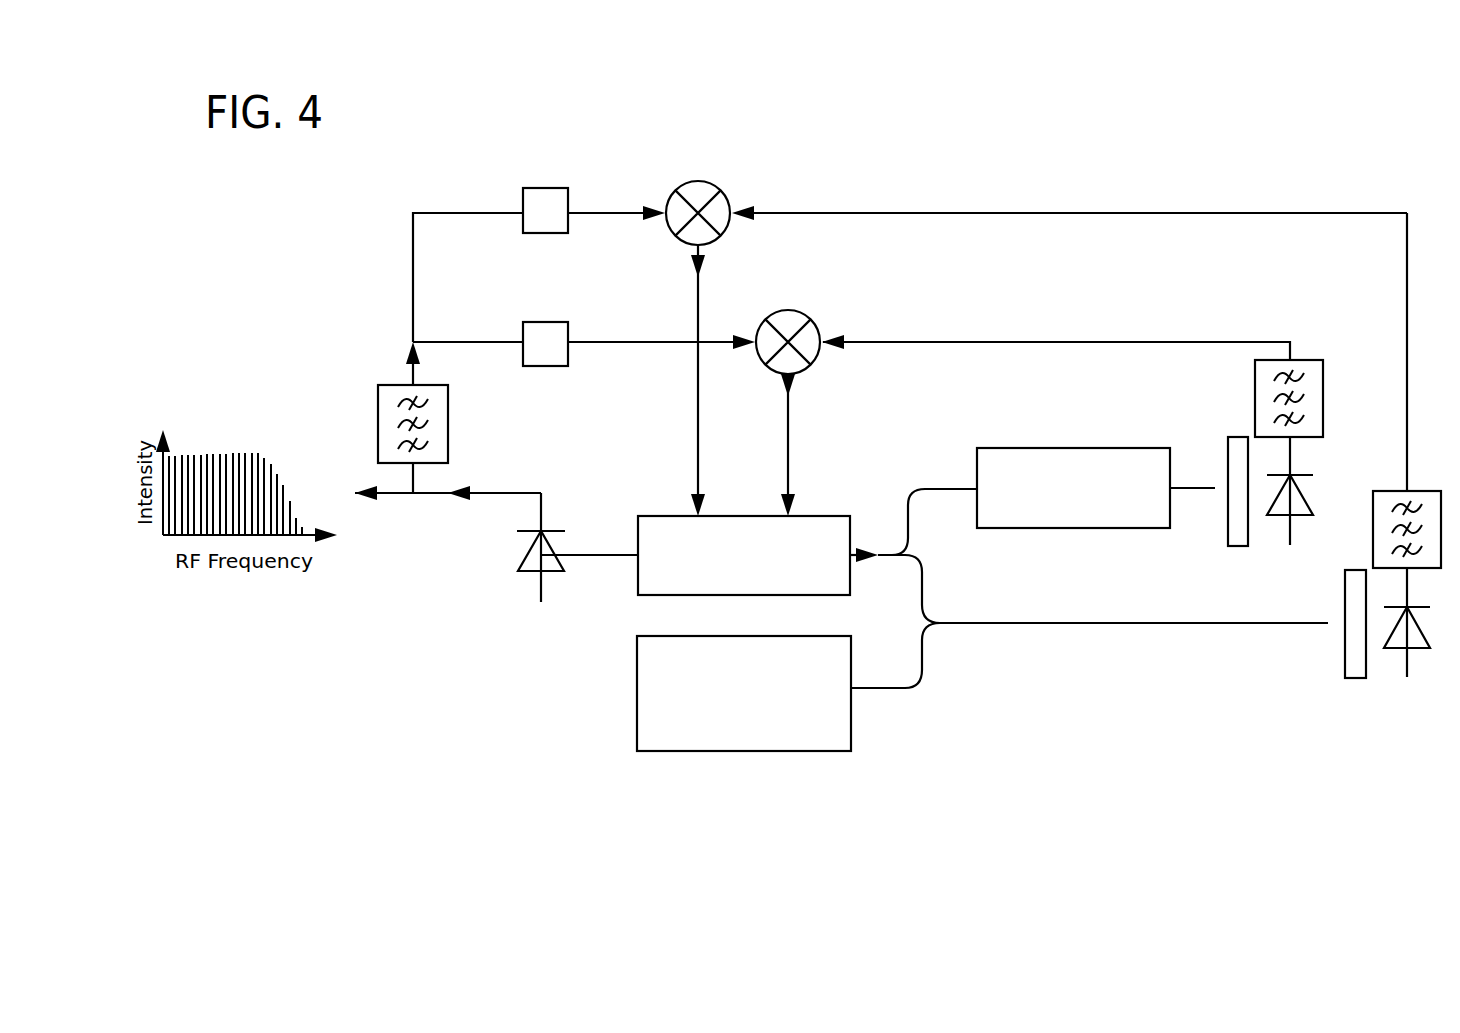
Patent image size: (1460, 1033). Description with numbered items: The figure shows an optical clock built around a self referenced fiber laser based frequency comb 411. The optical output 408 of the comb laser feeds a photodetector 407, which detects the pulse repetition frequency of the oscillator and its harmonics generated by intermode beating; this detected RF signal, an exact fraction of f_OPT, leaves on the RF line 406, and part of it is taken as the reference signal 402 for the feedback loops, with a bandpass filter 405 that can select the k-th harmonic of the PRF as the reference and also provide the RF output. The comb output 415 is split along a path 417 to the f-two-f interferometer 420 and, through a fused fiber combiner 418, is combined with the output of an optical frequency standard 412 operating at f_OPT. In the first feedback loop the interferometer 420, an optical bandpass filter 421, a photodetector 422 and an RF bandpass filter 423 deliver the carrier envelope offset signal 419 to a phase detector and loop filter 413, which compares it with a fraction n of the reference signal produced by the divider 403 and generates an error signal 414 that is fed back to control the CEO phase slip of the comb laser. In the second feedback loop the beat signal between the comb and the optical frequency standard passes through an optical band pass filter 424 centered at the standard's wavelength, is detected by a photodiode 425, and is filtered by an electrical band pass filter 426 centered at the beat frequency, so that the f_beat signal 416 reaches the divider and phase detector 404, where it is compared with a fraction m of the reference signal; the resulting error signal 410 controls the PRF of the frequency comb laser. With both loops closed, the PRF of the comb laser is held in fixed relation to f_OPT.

The reference signal 402 is at (413, 291).
The divider 403 is at (568, 358).
The frequency divider (divide by m) and mixer 404 is at (523, 200).
The bandpass filter 405 is at (450, 418).
The RF signal line near f_OPT 406 is at (489, 492).
The photodetector 407 is at (527, 546).
The optical output 408 is at (597, 556).
The error signal 410 is at (698, 419).
The frequency comb 411 is at (745, 516).
The optical frequency standard 412 is at (637, 680).
The phase detector and loop filter 413 is at (787, 310).
The error signal 414 is at (790, 403).
The optical output of comb laser 415 is at (856, 558).
The f_beat signal line 416 is at (1040, 212).
The optical path to f-2f interferometer 417 is at (884, 553).
The fused fiber combiner 418 is at (950, 626).
The f_CEO signal line 419 is at (1106, 341).
The f-2f interferometer 420 is at (1075, 448).
The optical bandpass filter 421 is at (1227, 513).
The photodetector 422 is at (1286, 541).
The RF bandpass filter 423 is at (1255, 400).
The optical band pass filter 424 is at (1344, 645).
The photodiode 425 is at (1407, 677).
The electrical band pass filter 426 is at (1377, 491).